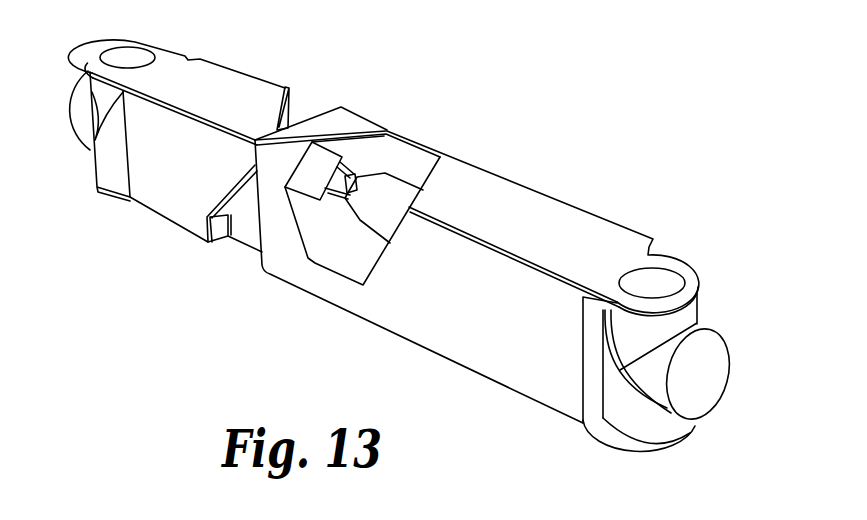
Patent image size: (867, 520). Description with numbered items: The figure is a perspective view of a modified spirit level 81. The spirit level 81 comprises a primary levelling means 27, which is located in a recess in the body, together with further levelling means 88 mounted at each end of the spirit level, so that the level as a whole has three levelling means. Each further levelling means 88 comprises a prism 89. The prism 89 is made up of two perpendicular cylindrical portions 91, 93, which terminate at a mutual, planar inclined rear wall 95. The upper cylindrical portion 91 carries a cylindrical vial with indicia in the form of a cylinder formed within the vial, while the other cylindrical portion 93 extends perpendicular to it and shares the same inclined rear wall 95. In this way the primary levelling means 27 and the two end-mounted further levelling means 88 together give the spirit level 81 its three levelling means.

The modified spirit level 81 is at (416, 251).
The further levelling means 88 is at (416, 251).
The upper cylindrical portion 91 is at (90, 81).
The cylindrical portion 93 is at (74, 97).
The prism 89 is at (663, 379).
The planar inclined rear wall 95 is at (642, 398).
The primary levelling means 27 is at (342, 250).